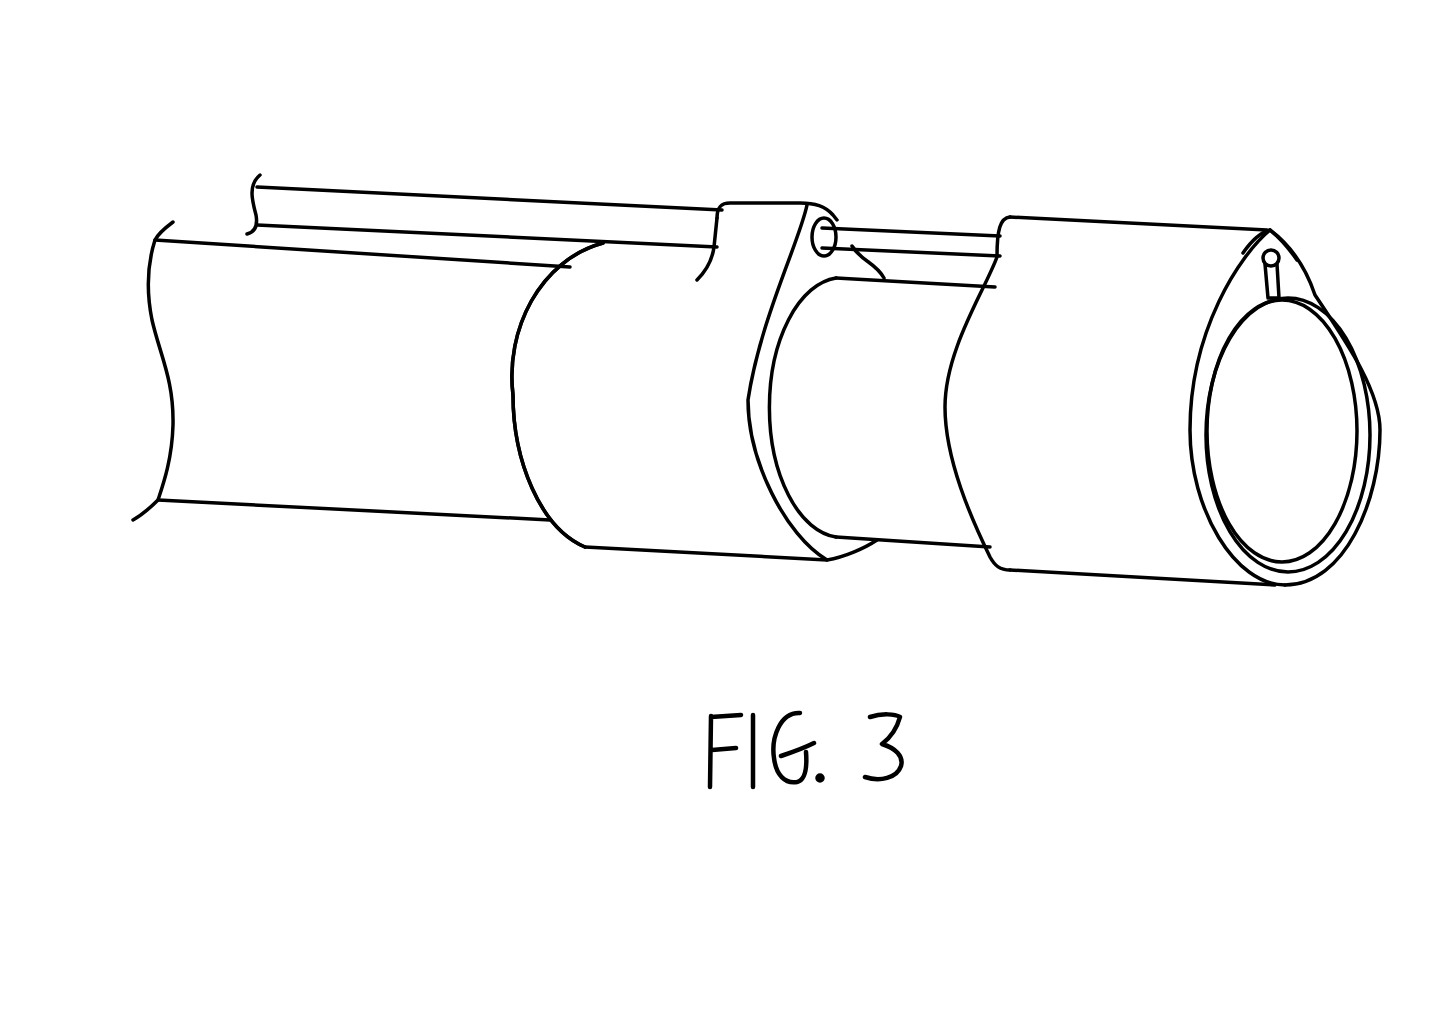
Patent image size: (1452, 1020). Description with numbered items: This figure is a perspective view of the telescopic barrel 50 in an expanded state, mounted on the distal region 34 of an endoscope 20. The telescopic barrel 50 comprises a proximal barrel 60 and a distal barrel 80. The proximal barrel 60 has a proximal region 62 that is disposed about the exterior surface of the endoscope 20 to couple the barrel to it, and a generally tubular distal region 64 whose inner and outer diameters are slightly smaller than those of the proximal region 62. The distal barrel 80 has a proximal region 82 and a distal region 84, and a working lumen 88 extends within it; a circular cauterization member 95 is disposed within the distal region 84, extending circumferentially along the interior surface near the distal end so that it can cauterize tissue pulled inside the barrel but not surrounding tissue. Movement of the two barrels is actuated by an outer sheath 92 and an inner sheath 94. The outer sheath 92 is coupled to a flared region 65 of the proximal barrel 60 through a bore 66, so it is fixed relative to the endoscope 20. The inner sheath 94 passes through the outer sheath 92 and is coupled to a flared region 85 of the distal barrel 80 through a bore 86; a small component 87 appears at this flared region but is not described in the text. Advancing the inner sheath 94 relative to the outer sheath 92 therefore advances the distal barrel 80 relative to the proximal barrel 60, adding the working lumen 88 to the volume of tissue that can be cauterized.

The endoscope 20 is at (268, 487).
The distal region of the endoscope 34 is at (520, 507).
The telescopic barrel 50 is at (666, 147).
The proximal barrel 60 is at (753, 380).
The proximal region of the proximal barrel 62 is at (577, 515).
The distal region of the proximal barrel 64 is at (905, 513).
The flared region of the proximal barrel 65 is at (765, 223).
The bore 66 is at (836, 216).
The distal barrel 80 is at (1197, 407).
The proximal region of the distal barrel 82 is at (1007, 548).
The distal region of the distal barrel 84 is at (1262, 572).
The flared region of the distal barrel 85 is at (1133, 243).
The bore 86 is at (1283, 250).
The fastener 87 is at (1280, 280).
The working lumen 88 is at (1290, 513).
The outer sheath 92 is at (496, 213).
The inner sheath 94 is at (923, 242).
The cauterization member 95 is at (1347, 383).